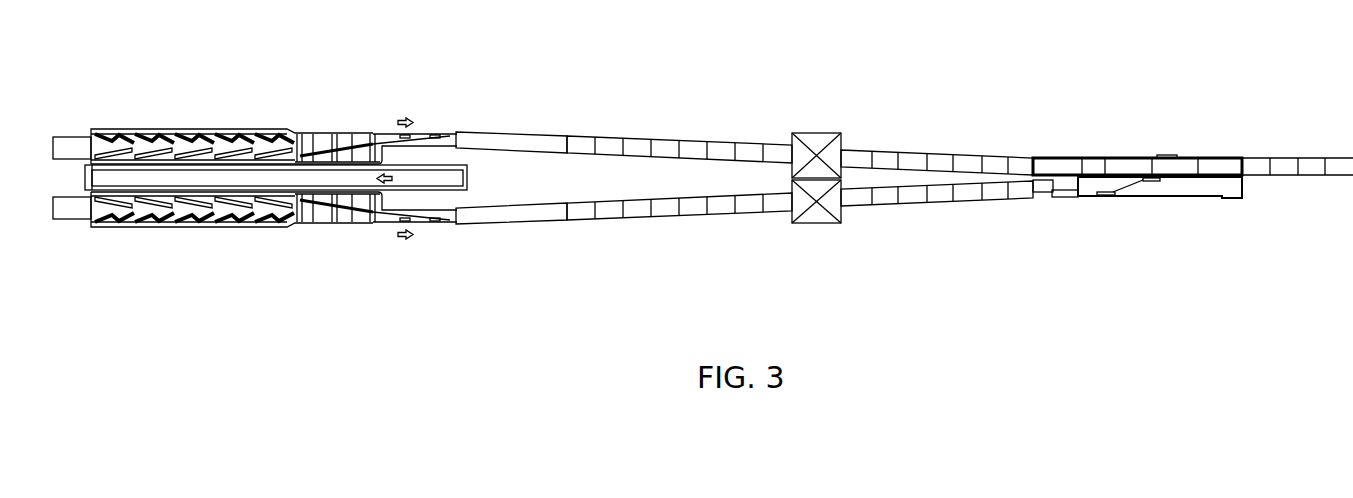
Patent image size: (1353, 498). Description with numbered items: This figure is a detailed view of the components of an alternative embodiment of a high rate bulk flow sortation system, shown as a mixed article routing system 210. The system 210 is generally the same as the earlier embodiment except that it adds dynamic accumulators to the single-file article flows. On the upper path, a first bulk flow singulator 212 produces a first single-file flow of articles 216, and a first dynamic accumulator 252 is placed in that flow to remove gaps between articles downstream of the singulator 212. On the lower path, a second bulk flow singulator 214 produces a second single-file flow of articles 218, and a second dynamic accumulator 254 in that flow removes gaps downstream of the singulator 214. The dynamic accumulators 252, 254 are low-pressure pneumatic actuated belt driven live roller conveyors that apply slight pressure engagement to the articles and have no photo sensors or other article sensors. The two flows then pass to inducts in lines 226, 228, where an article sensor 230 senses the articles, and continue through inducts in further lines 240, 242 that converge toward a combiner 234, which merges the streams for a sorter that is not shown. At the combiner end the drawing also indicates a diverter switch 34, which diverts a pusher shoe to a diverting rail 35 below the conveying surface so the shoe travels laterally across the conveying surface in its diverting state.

The mixed article routing system 210 is at (758, 50).
The first bulk flow singulator 212 is at (188, 128).
The second bulk flow singulator 214 is at (187, 228).
The first single-file flow of articles 216 is at (337, 112).
The second single-file flow of articles 218 is at (338, 258).
The first dynamic accumulator 252 is at (512, 137).
The second dynamic accumulator 254 is at (517, 218).
The induct line 226 is at (662, 146).
The induct line 228 is at (662, 209).
The article sensor 230 is at (812, 133).
The induct line 240 is at (940, 160).
The induct line 242 is at (940, 198).
The combiner 234 is at (1097, 158).
The diverter switch 34 is at (1105, 195).
The diverting rail 35 is at (1130, 183).